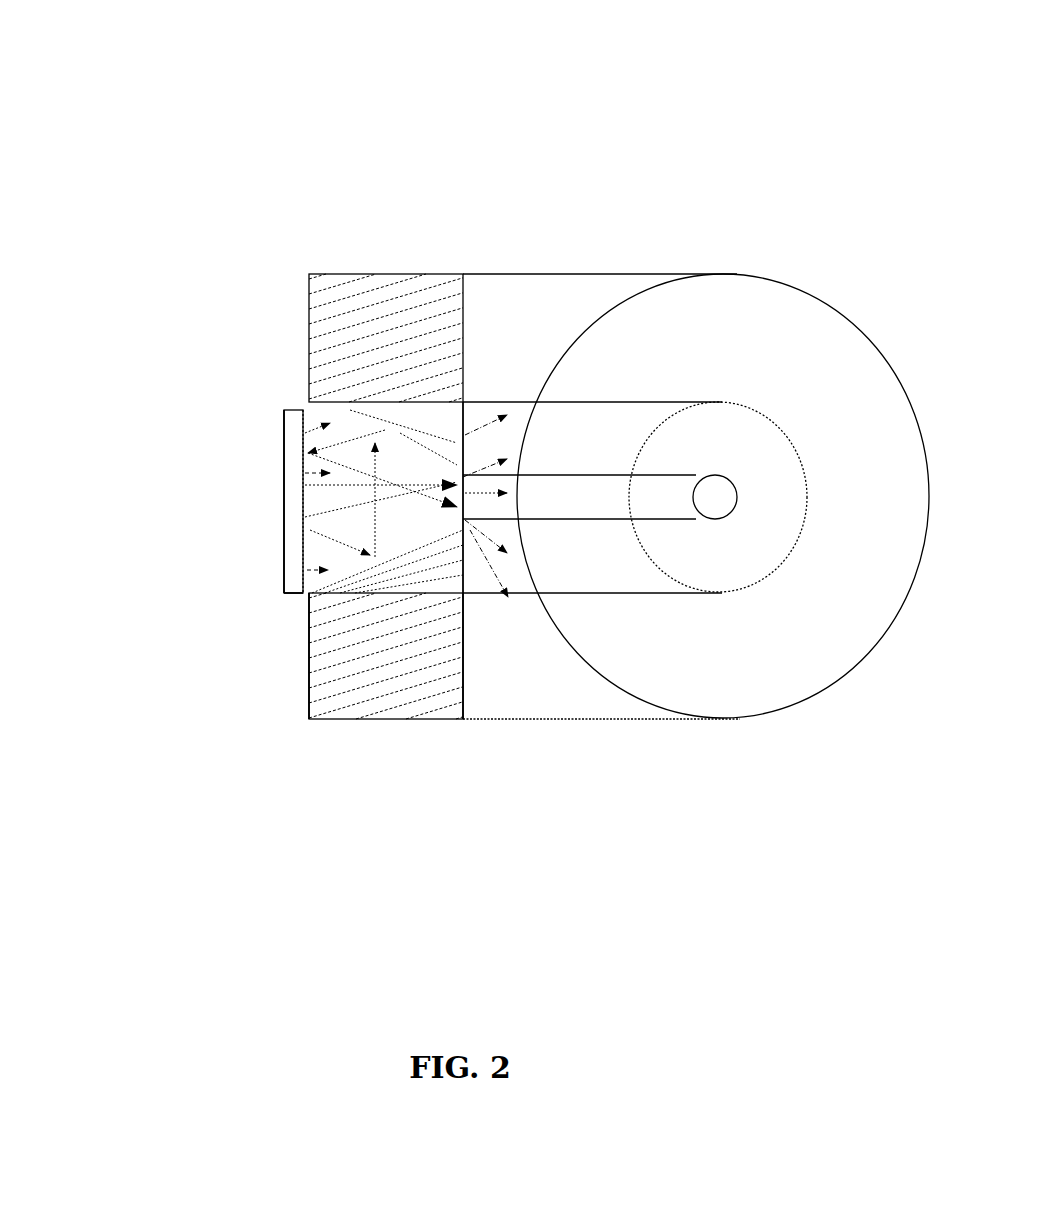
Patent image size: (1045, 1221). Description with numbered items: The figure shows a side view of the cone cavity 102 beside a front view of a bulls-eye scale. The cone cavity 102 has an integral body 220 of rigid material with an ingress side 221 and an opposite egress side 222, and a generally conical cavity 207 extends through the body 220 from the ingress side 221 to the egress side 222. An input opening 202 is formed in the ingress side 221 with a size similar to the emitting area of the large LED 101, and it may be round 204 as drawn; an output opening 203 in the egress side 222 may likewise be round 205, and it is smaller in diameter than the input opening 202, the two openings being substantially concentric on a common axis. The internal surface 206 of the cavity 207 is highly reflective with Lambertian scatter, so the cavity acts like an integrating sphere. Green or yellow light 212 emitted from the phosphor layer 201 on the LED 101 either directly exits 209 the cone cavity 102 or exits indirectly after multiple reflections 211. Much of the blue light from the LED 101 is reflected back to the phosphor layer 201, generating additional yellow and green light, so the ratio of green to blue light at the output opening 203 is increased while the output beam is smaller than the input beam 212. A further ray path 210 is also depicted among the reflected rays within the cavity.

The large LED 101 is at (292, 453).
The cone cavity 102 is at (360, 88).
The phosphor layer 201 is at (296, 528).
The input opening 202 is at (302, 598).
The output opening 203 is at (464, 522).
The round input opening shape 204 is at (744, 600).
The round output opening shape 205 is at (733, 522).
The internal surface 206 is at (383, 427).
The cavity 207 is at (392, 503).
The direct exit of light 209 is at (420, 477).
The light ray 210 is at (345, 461).
The multiple reflections 211 is at (494, 446).
The green or yellow light beam 212 is at (329, 512).
The body 220 is at (393, 693).
The ingress side 221 is at (308, 663).
The egress side 222 is at (463, 665).